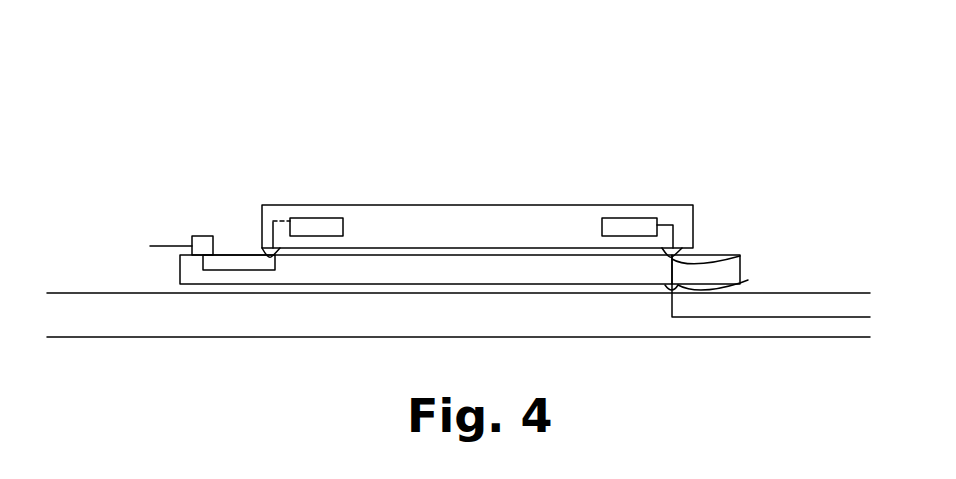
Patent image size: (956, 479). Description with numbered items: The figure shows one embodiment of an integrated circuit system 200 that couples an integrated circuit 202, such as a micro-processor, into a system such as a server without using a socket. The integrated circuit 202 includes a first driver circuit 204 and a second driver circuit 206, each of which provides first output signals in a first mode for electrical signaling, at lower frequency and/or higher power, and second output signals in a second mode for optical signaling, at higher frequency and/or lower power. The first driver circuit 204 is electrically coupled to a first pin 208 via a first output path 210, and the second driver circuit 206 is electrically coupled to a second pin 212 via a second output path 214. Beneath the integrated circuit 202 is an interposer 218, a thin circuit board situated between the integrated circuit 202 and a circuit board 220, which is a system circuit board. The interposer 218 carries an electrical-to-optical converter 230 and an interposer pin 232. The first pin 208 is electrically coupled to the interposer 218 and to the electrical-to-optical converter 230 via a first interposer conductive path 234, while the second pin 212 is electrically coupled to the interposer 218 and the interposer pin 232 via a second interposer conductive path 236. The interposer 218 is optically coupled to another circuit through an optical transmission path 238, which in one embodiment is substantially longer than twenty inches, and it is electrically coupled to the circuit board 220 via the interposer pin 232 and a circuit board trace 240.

The integrated circuit system 200 is at (758, 53).
The integrated circuit 202 is at (468, 212).
The first driver circuit 204 is at (318, 218).
The second driver circuit 206 is at (628, 218).
The first pin 208 is at (266, 243).
The first output path 210 is at (274, 222).
The second pin 212 is at (677, 246).
The second output path 214 is at (665, 223).
The interposer 218 is at (742, 263).
The circuit board 220 is at (478, 328).
The electrical-to-optical converter 230 is at (198, 238).
The interposer pin 232 is at (748, 280).
The first interposer conductive path 234 is at (232, 270).
The second interposer conductive path 236 is at (740, 256).
The optical transmission path 238 is at (150, 246).
The circuit board trace 240 is at (777, 317).